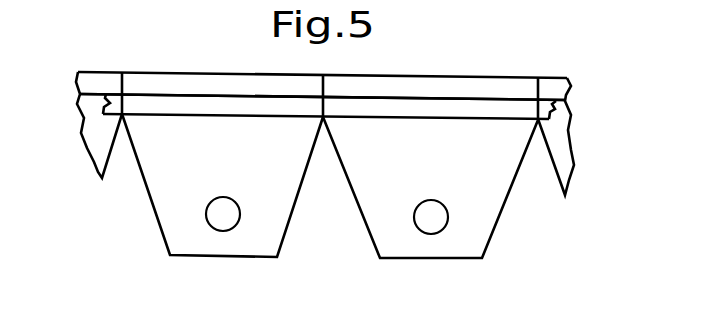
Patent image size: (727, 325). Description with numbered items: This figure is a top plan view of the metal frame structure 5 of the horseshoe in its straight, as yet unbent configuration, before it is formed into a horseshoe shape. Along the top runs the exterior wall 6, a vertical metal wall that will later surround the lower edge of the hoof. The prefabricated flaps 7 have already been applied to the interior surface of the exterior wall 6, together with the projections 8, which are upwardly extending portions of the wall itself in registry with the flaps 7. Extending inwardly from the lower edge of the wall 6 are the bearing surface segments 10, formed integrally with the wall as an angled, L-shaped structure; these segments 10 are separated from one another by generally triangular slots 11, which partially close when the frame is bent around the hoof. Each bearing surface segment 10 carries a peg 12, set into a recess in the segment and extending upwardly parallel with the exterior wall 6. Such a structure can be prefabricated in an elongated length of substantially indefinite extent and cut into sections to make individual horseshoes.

The metal frame structure 5 is at (556, 69).
The exterior wall 6 is at (476, 88).
The projections 8 is at (476, 88).
The flaps 7 is at (408, 110).
The bearing surface segments 10 is at (562, 154).
The slots 11 is at (326, 193).
The pegs 12 is at (431, 235).